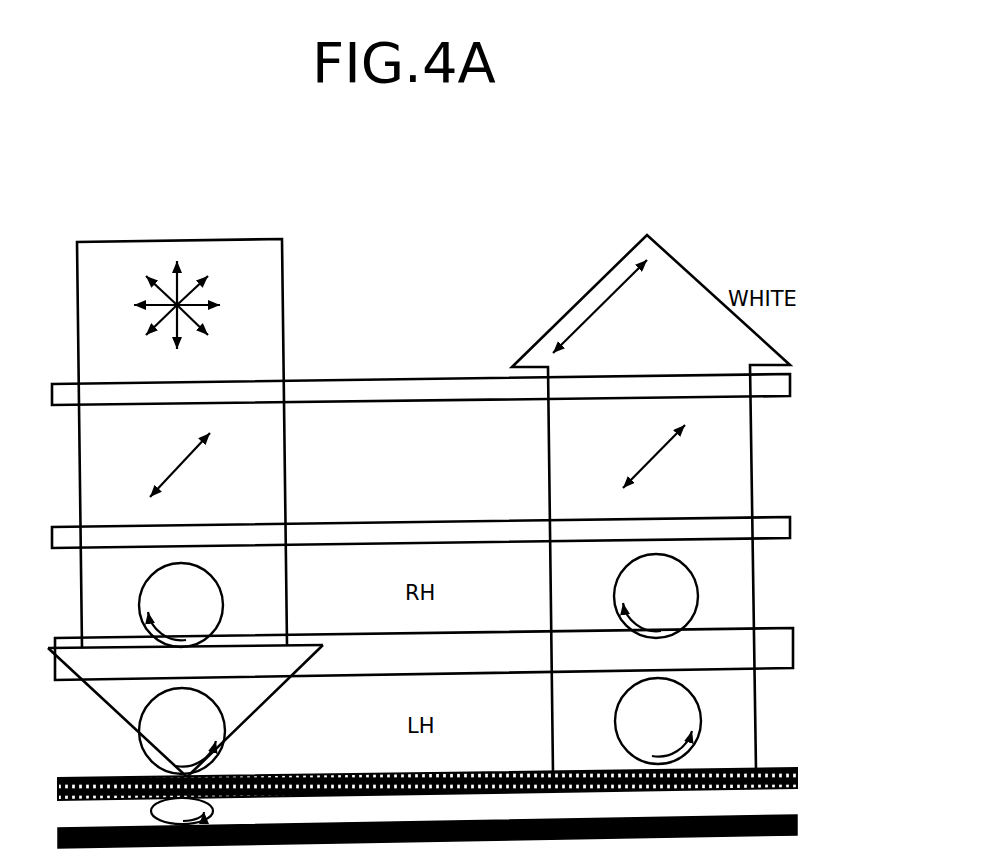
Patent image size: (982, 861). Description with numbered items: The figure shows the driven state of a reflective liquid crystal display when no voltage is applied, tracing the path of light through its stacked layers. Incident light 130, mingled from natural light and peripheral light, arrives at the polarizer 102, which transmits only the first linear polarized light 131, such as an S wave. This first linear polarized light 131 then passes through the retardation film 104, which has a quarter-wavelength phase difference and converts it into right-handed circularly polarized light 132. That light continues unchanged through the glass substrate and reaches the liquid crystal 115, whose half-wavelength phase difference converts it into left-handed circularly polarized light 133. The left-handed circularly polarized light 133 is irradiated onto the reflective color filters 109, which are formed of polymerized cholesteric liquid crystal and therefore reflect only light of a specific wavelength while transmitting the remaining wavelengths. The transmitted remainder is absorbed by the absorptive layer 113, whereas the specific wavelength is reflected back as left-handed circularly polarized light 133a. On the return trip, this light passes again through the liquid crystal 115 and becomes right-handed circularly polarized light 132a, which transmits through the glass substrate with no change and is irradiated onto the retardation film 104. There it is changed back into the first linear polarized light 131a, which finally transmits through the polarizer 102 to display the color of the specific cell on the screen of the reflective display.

The incident light 130 is at (207, 276).
The first linear polarized light 131 is at (212, 431).
The right-handed circularly polarized light 132 is at (196, 564).
The left-handed circularly polarized light 133 is at (137, 729).
The first linear polarized light 131a is at (657, 455).
The right-handed circularly polarized light 132a is at (699, 597).
The left-handed circularly polarized light 133a is at (701, 734).
The polarizer 102 is at (792, 386).
The retardation film 104 is at (792, 528).
The liquid crystal 115 is at (780, 657).
The reflective color filters 109 is at (799, 778).
The absorptive layer 113 is at (799, 825).